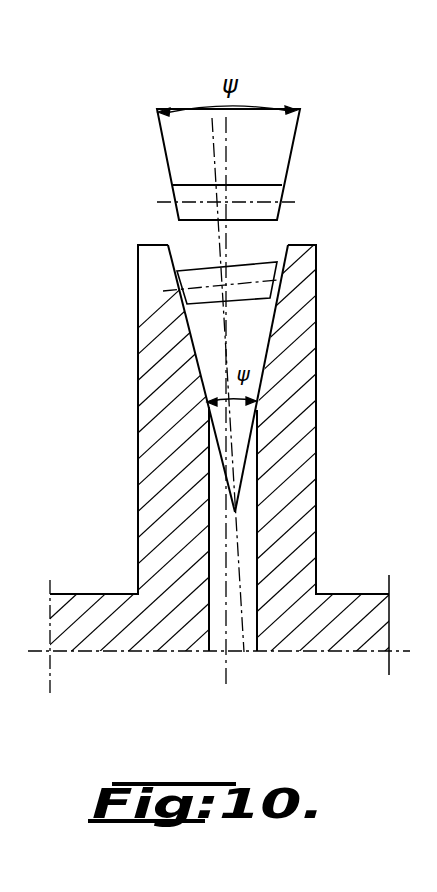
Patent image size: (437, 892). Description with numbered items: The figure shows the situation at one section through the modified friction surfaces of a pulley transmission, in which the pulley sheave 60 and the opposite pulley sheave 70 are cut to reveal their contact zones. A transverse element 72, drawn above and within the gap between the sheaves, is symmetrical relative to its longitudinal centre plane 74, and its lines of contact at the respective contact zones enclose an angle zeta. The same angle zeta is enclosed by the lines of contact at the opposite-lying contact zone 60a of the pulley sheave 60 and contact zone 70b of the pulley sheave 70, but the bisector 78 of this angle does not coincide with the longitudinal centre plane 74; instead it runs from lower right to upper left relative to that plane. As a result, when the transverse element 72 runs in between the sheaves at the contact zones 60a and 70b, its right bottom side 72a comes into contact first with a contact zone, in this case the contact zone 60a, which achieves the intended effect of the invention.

The pulley sheave 60 is at (300, 342).
The contact zone 60a is at (285, 303).
The pulley sheave 70 is at (155, 362).
The contact zone 70b is at (186, 303).
The transverse element 72 is at (281, 195).
The right bottom side of the transverse element 72a is at (281, 212).
The longitudinal centre plane 74 is at (227, 147).
The bisector 78 is at (238, 585).